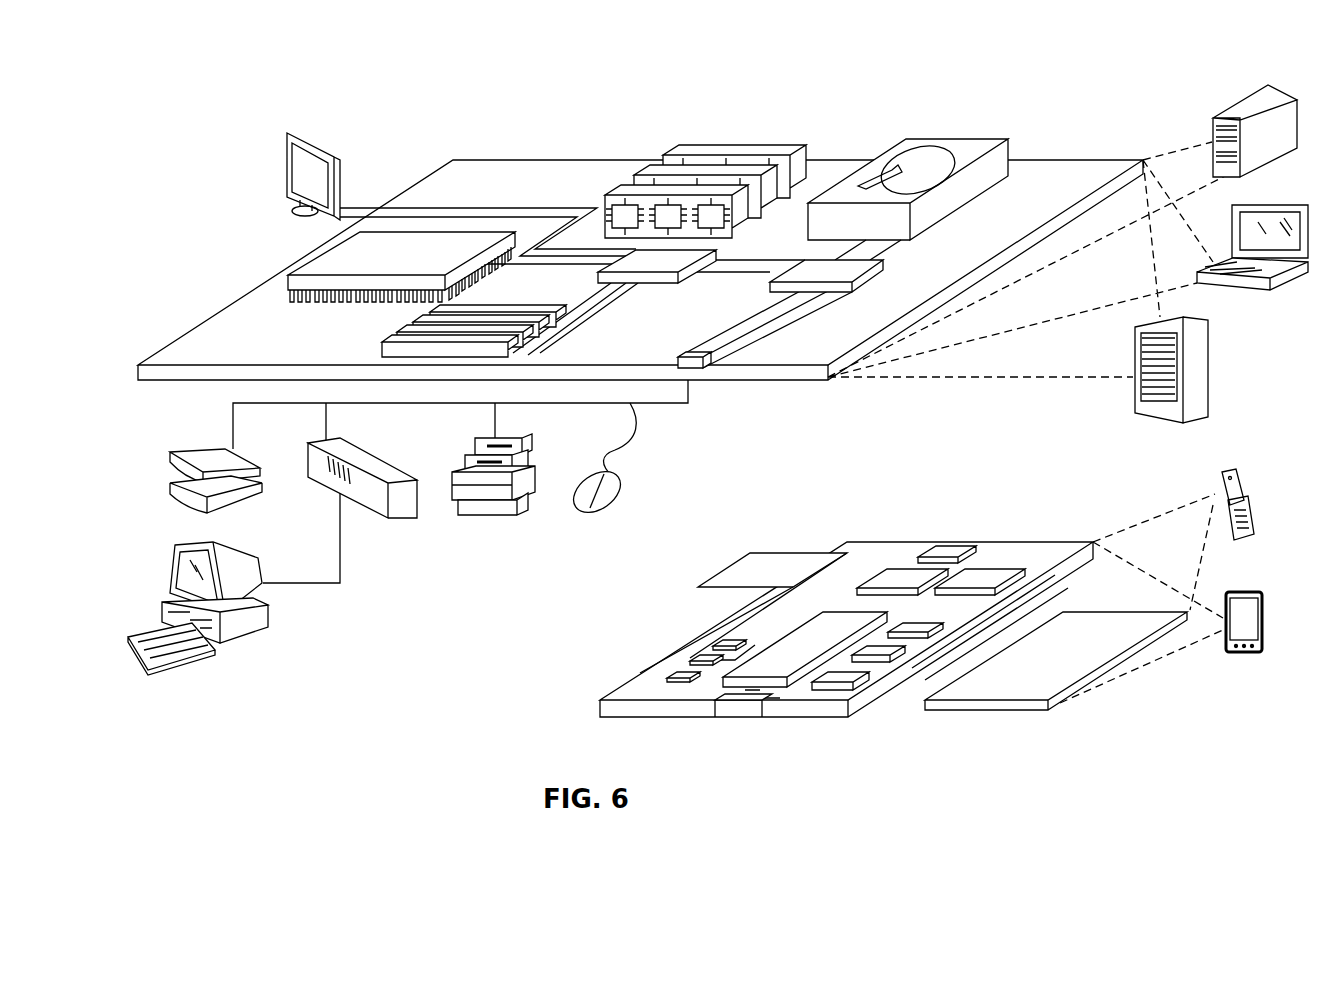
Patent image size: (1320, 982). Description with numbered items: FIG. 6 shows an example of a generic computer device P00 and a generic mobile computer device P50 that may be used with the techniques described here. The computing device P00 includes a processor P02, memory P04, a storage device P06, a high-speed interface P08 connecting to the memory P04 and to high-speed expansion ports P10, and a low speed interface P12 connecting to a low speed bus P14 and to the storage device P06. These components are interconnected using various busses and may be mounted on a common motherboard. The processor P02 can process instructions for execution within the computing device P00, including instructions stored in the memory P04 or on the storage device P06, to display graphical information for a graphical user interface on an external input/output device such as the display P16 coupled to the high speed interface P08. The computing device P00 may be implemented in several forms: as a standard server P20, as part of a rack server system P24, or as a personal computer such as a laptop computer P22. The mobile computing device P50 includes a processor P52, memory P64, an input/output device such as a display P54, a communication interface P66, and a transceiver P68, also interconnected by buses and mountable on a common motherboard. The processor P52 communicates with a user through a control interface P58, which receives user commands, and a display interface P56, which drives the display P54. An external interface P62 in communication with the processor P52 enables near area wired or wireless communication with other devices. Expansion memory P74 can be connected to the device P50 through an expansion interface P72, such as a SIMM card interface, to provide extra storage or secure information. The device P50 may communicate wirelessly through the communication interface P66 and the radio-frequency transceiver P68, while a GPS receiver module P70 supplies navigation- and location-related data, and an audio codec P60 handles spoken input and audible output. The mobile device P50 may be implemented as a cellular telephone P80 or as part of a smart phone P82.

The computing device P00 is at (685, 332).
The processor P02 is at (315, 258).
The memory P04 is at (731, 150).
The storage device P06 is at (948, 138).
The high-speed interface P08 is at (667, 260).
The high-speed expansion ports P10 is at (406, 334).
The low speed interface P12 is at (803, 266).
The low speed bus P14 is at (697, 351).
The display P16 is at (290, 134).
The standard server P20 is at (1233, 108).
The laptop computer P22 is at (1283, 204).
The rack server system P24 is at (1209, 366).
The mobile computer device P50 is at (911, 621).
The processor P52 is at (777, 652).
The display P54 is at (1091, 620).
The display interface P56 is at (860, 676).
The control interface P58 is at (893, 652).
The audio codec P60 is at (920, 625).
The external interface P62 is at (738, 704).
The memory P64 is at (695, 656).
The communication interface P66 is at (905, 572).
The transceiver P68 is at (985, 576).
The GPS receiver module P70 is at (949, 552).
The expansion interface P72 is at (830, 552).
The expansion memory P74 is at (751, 552).
The cellular telephone P80 is at (1230, 470).
The smart phone P82 is at (1237, 592).